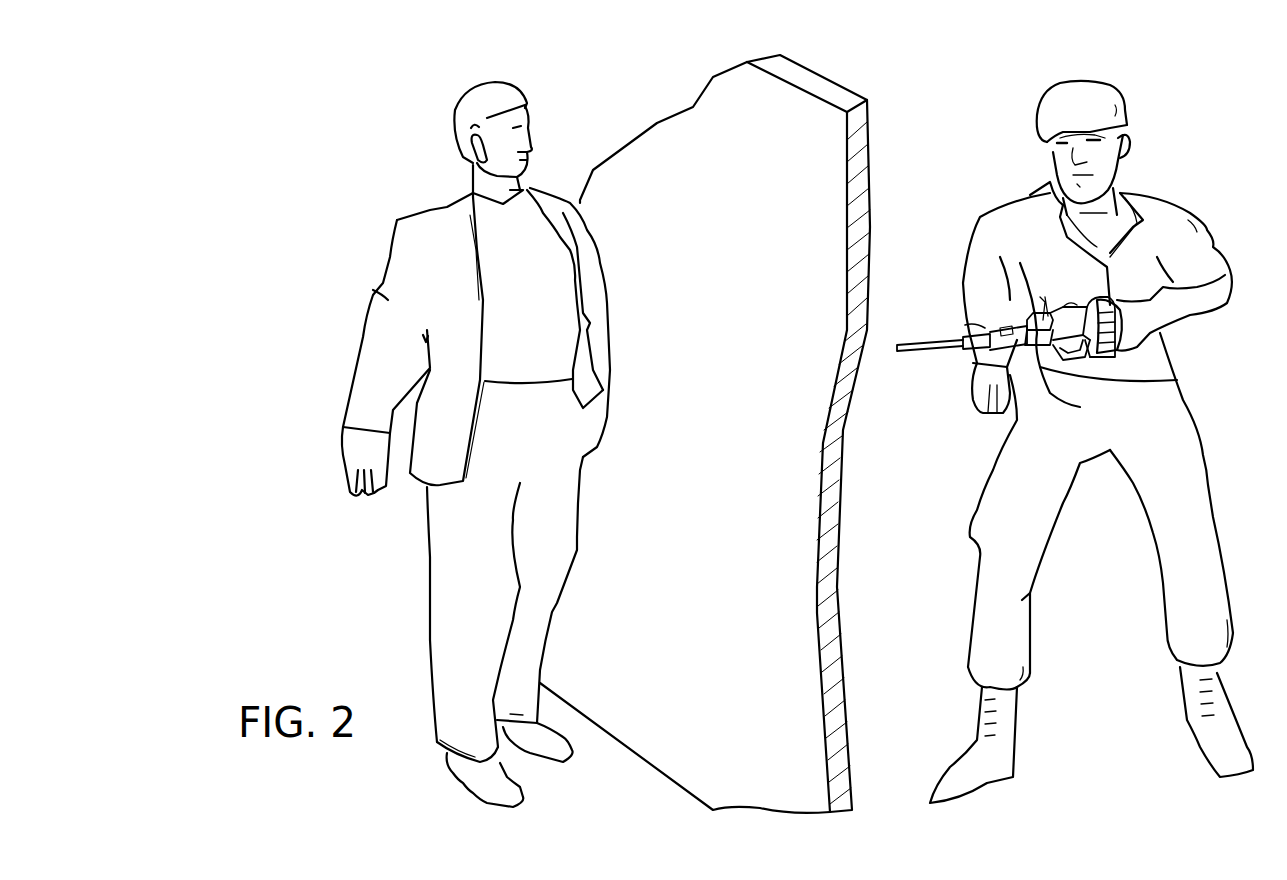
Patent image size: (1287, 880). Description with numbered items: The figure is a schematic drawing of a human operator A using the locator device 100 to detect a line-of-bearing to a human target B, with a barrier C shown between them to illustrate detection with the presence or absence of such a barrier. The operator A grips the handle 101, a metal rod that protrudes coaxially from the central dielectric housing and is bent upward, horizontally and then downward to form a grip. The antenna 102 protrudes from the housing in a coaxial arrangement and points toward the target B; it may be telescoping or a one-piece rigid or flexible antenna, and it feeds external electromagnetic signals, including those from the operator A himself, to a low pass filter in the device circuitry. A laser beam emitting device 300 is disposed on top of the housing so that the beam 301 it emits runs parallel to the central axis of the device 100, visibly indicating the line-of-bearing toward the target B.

The human operator A is at (1167, 197).
The human target B is at (526, 320).
The barrier C is at (666, 294).
The locator device 100 is at (977, 400).
The handle 101 is at (1177, 380).
The antenna 102 is at (937, 350).
The laser beam emitting device 300 is at (1005, 292).
The beam 301 is at (943, 332).